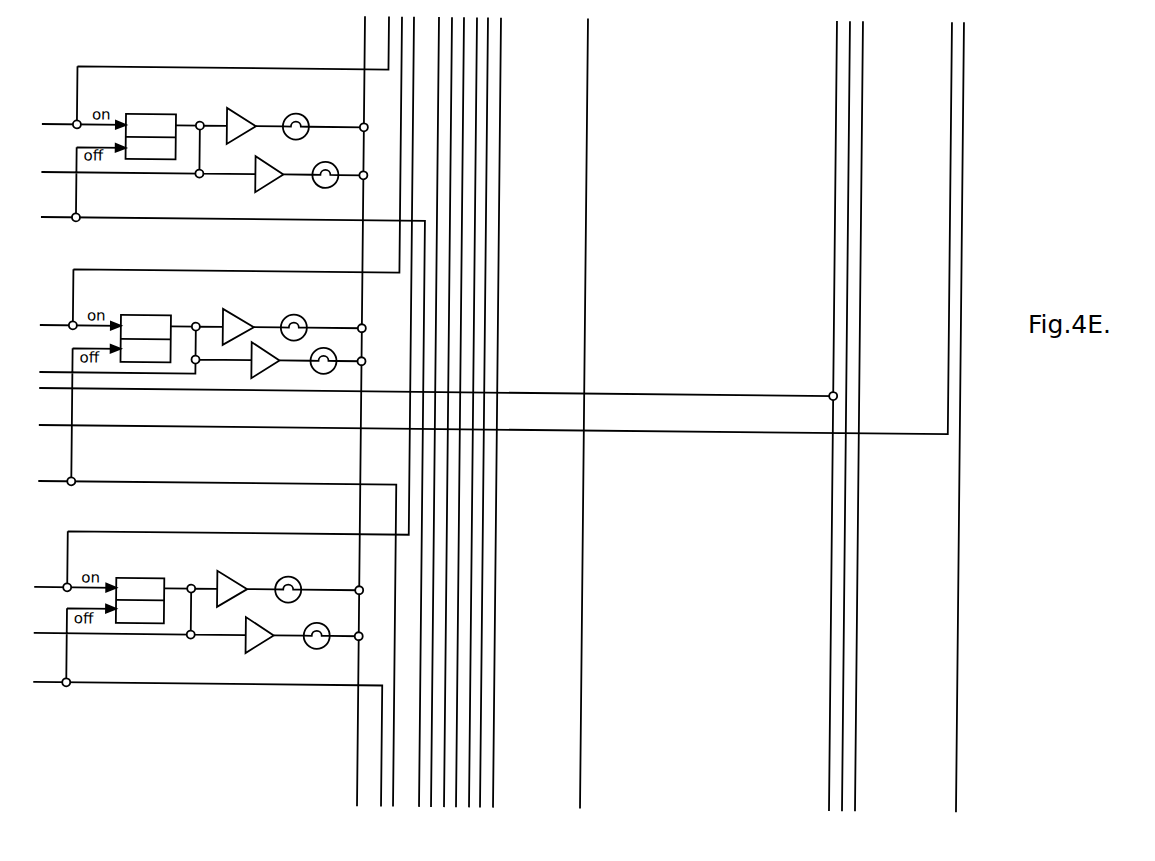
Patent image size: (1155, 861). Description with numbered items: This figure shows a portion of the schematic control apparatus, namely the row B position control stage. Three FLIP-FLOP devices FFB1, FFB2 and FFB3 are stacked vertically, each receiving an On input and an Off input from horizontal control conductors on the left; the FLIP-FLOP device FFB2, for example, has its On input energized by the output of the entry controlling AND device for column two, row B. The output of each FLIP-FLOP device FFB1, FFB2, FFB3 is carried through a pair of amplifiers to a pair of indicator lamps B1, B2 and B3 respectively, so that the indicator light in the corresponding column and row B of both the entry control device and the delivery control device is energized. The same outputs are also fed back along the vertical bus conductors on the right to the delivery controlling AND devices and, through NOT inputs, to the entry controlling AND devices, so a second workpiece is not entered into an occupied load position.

The FLIP-FLOP device FFB1 is at (178, 111).
The FLIP-FLOP device FFB2 is at (175, 313).
The FLIP-FLOP device FFB3 is at (172, 576).
The lamp B1 is at (302, 116).
The lamp B2 is at (302, 317).
The lamp B3 is at (299, 579).